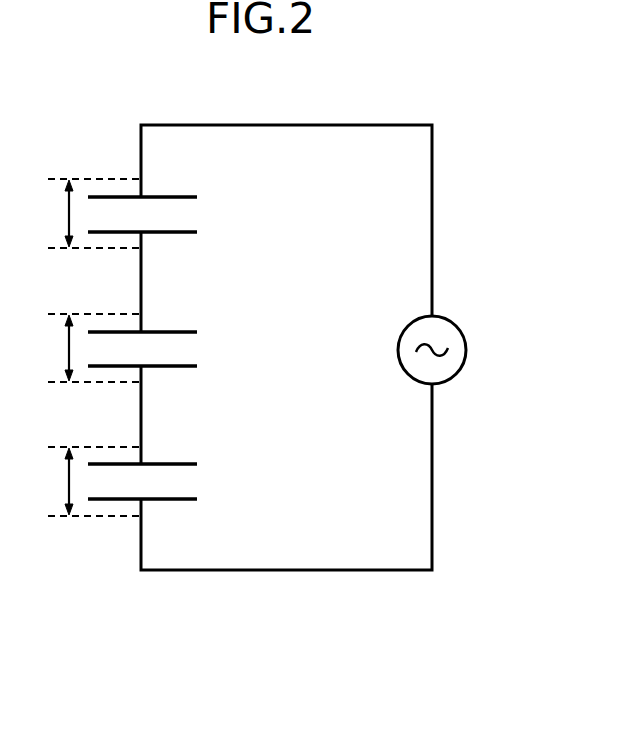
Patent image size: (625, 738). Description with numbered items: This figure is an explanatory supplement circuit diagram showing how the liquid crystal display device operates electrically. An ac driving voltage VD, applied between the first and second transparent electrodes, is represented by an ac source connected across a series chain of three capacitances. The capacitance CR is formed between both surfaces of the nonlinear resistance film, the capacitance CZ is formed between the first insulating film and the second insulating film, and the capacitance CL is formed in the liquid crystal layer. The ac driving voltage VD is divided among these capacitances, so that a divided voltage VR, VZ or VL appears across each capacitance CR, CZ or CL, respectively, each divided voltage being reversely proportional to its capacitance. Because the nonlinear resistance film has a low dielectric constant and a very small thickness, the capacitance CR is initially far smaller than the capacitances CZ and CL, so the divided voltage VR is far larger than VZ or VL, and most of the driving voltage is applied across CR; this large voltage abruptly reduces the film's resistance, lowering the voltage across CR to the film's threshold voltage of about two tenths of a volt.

The capacitance of the nonlinear resistance film CR is at (160, 214).
The capacitance between the insulating films CZ is at (160, 349).
The capacitance of the liquid crystal layer CL is at (159, 481).
The divided voltage across the nonlinear resistance film capacitance VR is at (85, 213).
The divided voltage across the insulating film capacitance VZ is at (85, 348).
The divided voltage across the liquid crystal capacitance VL is at (85, 481).
The ac driving voltage VD is at (453, 350).